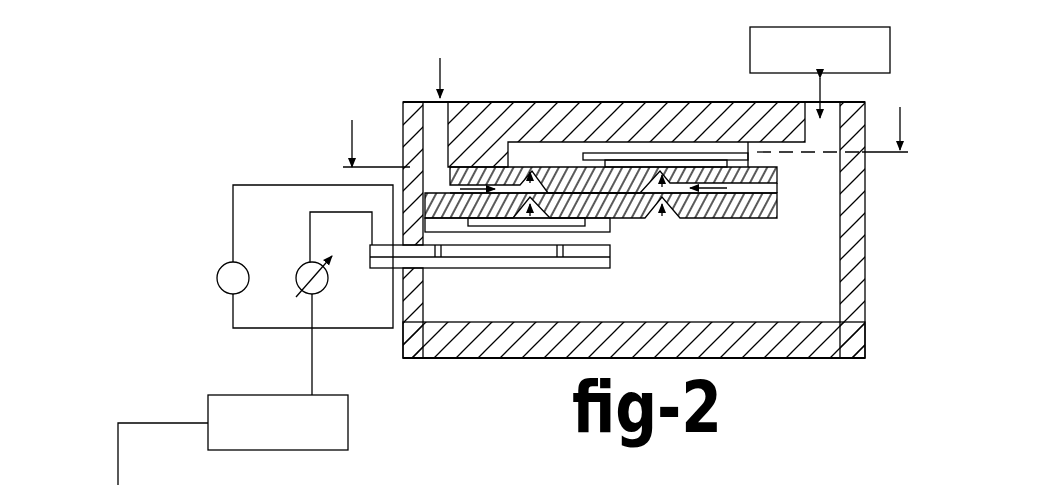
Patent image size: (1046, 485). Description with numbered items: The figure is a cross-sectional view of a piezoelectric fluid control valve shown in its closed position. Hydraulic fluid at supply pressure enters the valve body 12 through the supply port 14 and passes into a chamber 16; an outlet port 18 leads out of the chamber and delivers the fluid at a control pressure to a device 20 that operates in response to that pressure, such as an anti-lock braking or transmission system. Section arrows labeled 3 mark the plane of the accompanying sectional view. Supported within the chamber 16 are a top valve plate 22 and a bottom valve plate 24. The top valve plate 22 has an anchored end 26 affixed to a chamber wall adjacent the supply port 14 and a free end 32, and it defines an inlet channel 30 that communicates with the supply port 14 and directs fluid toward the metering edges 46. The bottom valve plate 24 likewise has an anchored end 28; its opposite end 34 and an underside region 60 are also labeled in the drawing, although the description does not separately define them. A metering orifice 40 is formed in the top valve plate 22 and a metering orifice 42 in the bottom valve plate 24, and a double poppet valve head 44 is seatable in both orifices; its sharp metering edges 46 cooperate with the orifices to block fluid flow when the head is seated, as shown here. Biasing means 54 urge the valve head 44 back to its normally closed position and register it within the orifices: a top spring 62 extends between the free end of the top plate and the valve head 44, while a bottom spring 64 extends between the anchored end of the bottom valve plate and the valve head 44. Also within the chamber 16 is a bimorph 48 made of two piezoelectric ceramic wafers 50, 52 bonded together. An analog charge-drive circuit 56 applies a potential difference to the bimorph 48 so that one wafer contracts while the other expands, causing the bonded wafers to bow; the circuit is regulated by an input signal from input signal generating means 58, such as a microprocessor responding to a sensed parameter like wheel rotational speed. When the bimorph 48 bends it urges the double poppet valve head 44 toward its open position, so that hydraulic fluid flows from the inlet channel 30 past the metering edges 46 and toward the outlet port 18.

The section line 3- 3 is at (620, 135).
The valve body 12 is at (863, 188).
The supply port 14 is at (440, 170).
The chamber 16 is at (825, 278).
The outlet port 18 is at (832, 101).
The external device 20 is at (892, 44).
The top valve plate 22 is at (678, 153).
The bottom valve plate 24 is at (710, 222).
The anchored end of top valve plate 26 is at (425, 182).
The anchored end of bottom valve plate 28 is at (425, 215).
The inlet channel 30 is at (470, 172).
The free end of top valve plate 32 is at (777, 182).
The lower plate 34 is at (777, 206).
The metering orifice 40 is at (528, 168).
The metering orifice 42 is at (700, 222).
The double poppet valve head 44 is at (673, 222).
The sharp metering edges 46 is at (553, 167).
The bimorph 48 is at (473, 255).
The piezoelectric ceramic wafer 50 is at (655, 222).
The piezoelectric ceramic wafer 52 is at (607, 221).
The means for biasing 54 is at (730, 153).
The analog charge-drive circuit 56 is at (270, 340).
The input signal generating means 58 is at (262, 450).
The valve seat 60 is at (733, 199).
The top spring 62 is at (623, 153).
The bottom spring 64 is at (530, 232).